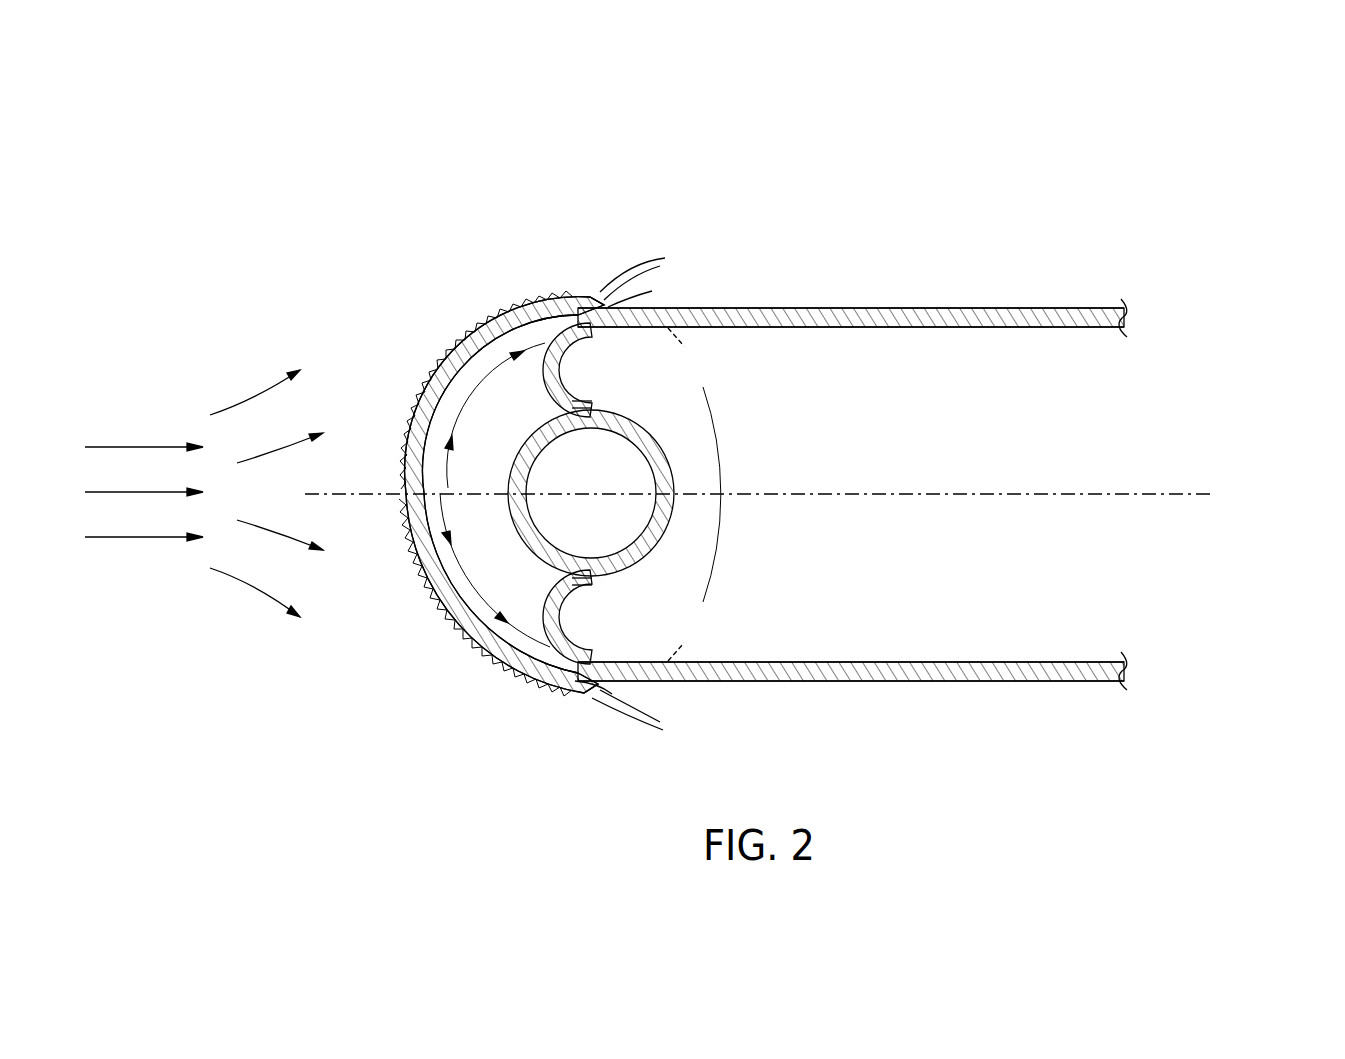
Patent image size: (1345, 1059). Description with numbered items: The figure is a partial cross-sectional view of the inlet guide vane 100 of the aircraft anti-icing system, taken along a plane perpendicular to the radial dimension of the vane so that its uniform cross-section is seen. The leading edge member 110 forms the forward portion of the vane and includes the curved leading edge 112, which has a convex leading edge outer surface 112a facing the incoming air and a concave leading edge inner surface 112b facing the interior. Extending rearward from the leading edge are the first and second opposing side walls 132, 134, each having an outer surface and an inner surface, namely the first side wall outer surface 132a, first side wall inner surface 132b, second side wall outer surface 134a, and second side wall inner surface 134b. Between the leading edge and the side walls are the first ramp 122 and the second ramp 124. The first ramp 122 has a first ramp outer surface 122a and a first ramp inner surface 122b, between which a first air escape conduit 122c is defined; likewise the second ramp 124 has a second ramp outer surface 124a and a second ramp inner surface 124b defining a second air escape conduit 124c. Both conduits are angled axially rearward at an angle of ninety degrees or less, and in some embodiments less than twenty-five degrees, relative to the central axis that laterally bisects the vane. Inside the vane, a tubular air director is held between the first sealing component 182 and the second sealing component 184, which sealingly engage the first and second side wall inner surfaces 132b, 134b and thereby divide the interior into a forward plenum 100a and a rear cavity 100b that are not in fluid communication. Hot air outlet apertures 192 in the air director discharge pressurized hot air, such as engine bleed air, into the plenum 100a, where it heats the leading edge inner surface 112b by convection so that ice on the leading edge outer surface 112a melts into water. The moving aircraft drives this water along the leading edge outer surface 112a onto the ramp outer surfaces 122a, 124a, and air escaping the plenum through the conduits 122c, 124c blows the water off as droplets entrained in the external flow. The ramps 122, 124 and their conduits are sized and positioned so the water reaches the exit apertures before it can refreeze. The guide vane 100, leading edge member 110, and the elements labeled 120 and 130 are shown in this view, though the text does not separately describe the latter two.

The inlet guide vane 100 is at (1257, 506).
The plenum 100a is at (543, 404).
The cavity 100b is at (815, 529).
The leading edge member 110 is at (429, 116).
The leading edge 112 is at (407, 477).
The leading edge outer surface 112a is at (415, 433).
The leading edge inner surface 112b is at (426, 523).
The connecting structure 120 is at (636, 116).
The first ramp 122 is at (562, 292).
The first ramp outer surface 122a is at (640, 300).
The first ramp inner surface 122b is at (540, 328).
The first air escape conduit 122c is at (592, 292).
The second ramp 124 is at (552, 694).
The second ramp outer surface 124a is at (633, 697).
The second ramp inner surface 124b is at (544, 655).
The second air escape conduit 124c is at (588, 703).
The housing walls 130 is at (866, 116).
The first side wall 132 is at (1126, 320).
The first side wall outer surface 132a is at (888, 308).
The first side wall inner surface 132b is at (1080, 328).
The second side wall 134 is at (1126, 668).
The second side wall outer surface 134a is at (884, 681).
The second side wall inner surface 134b is at (1086, 662).
The first sealing component 182 is at (595, 407).
The second sealing component 184 is at (595, 580).
The hot air outlet apertures 192 is at (521, 570).